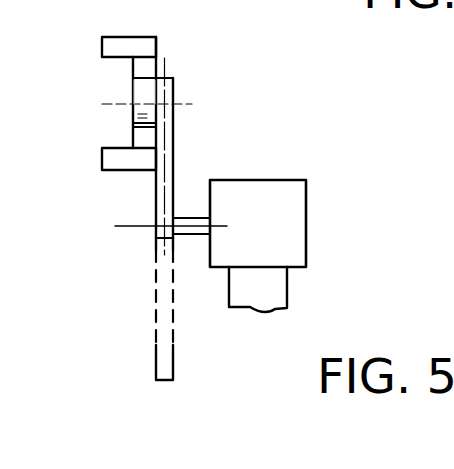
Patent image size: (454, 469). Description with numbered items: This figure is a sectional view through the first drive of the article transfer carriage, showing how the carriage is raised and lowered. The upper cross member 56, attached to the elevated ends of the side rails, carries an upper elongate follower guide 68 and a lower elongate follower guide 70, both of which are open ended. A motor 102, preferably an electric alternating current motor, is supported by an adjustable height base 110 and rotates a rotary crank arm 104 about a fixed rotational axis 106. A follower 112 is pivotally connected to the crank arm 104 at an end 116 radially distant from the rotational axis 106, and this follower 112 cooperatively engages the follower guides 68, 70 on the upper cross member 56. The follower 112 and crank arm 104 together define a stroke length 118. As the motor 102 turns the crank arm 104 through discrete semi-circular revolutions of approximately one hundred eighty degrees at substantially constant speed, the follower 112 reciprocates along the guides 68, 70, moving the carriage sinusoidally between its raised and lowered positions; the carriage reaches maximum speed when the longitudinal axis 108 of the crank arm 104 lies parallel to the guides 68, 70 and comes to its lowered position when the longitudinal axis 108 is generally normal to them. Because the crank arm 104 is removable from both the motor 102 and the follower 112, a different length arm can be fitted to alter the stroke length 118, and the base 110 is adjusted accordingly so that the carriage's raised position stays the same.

The upper cross member 56 is at (107, 51).
The upper elongate follower guide 68 is at (133, 70).
The follower 112 is at (137, 93).
The lower elongate follower guide 70 is at (140, 137).
The end 116 is at (177, 100).
The rotary crank arm 104 is at (173, 150).
The fixed rotational axis 106 is at (115, 226).
The longitudinal axis 108 is at (163, 249).
The stroke length 118 is at (150, 374).
The motor 102 is at (294, 196).
The adjustable height base 110 is at (283, 288).